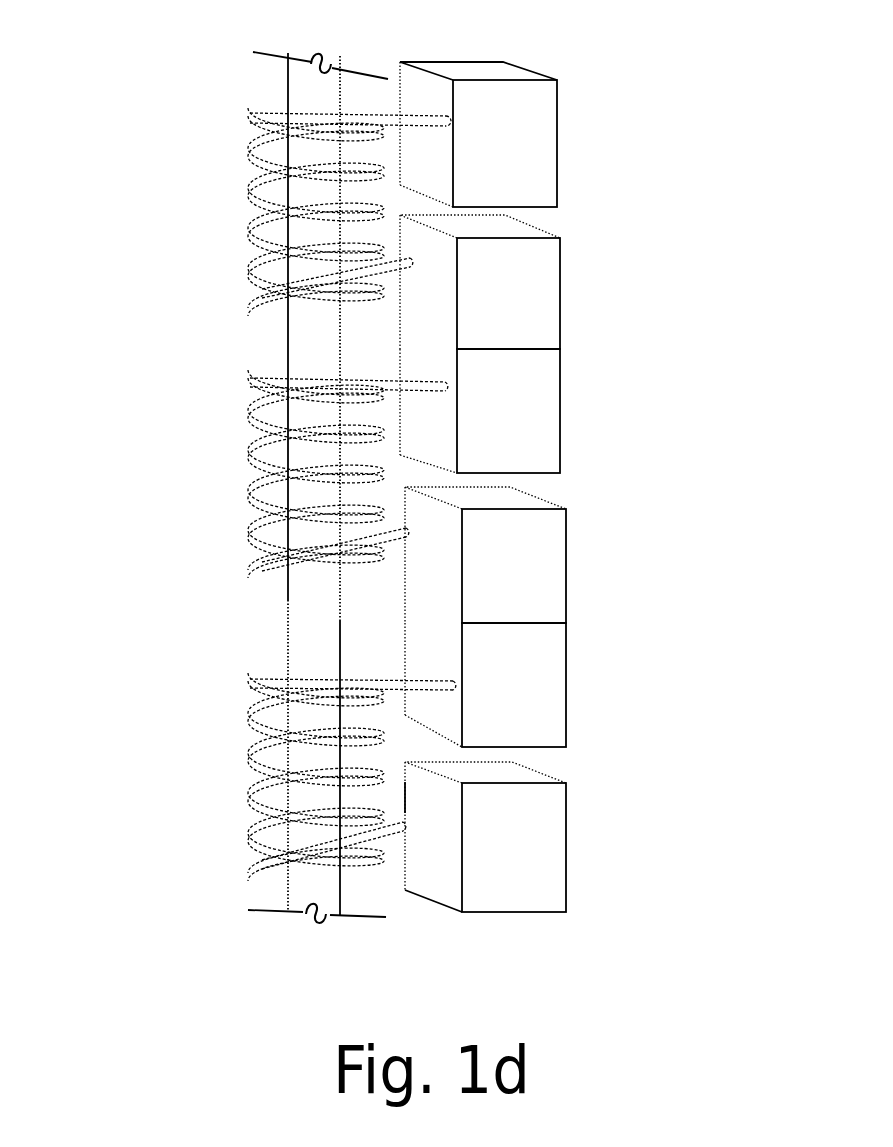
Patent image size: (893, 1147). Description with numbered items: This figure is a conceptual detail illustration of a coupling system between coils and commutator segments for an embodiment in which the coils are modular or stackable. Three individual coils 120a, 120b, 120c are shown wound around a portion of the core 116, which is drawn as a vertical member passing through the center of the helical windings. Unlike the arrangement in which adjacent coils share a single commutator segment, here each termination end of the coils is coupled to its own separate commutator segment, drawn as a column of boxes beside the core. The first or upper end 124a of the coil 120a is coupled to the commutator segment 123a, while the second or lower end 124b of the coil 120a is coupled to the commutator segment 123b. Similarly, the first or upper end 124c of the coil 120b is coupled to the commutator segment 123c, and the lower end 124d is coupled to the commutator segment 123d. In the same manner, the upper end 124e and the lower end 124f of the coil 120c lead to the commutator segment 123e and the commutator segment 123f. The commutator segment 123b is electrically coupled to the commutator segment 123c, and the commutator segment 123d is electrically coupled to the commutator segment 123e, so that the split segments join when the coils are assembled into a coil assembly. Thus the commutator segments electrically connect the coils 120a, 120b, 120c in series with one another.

The core 116 is at (300, 102).
The coil 120a is at (305, 248).
The coil 120b is at (305, 482).
The coil 120c is at (312, 733).
The commutator segment 123a is at (530, 157).
The commutator segment 123b is at (535, 308).
The commutator segment 123c is at (535, 427).
The commutator segment 123d is at (542, 578).
The commutator segment 123e is at (542, 702).
The commutator segment 123f is at (542, 858).
The first or upper end 124a is at (435, 115).
The second or lower end 124b is at (413, 258).
The first or upper end 124c is at (433, 383).
The lower end 124d is at (407, 532).
The first or upper end 124e is at (450, 682).
The lower end 124f is at (405, 823).